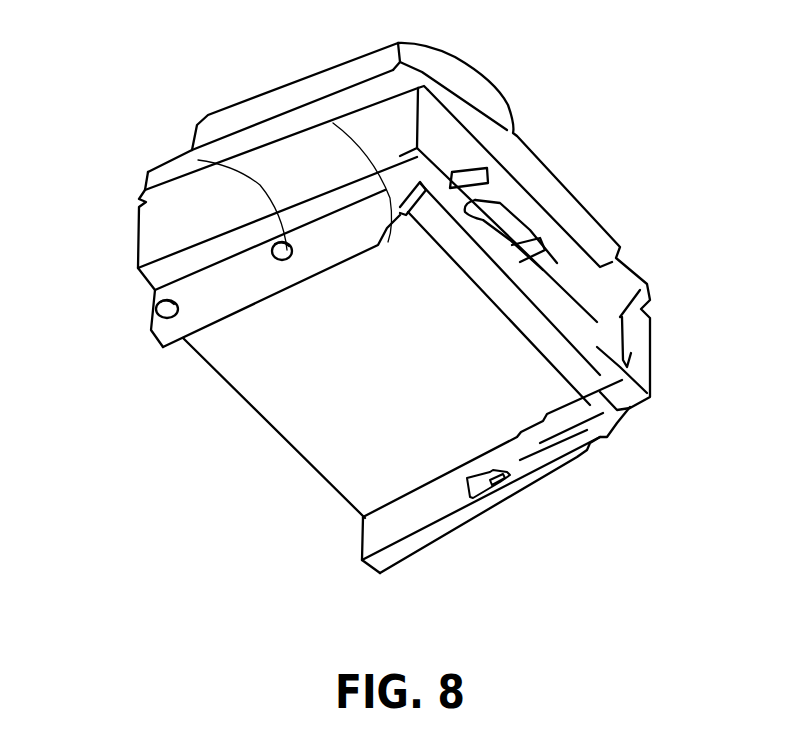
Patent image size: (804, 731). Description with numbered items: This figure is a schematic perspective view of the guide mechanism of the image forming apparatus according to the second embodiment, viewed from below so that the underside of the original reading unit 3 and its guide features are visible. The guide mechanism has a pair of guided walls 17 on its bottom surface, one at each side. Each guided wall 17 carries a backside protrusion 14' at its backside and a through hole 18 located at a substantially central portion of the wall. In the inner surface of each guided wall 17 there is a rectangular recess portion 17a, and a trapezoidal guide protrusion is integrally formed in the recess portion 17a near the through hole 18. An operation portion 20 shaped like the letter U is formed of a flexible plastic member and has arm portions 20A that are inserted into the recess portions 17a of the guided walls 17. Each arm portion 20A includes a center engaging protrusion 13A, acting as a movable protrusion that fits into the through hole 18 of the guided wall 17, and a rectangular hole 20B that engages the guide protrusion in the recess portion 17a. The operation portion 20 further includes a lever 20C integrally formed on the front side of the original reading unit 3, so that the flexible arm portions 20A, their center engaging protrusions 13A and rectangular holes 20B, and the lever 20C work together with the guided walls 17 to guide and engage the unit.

The original reading unit 3 is at (140, 243).
The center engaging protrusion 13A is at (190, 152).
The backside protrusion 14' is at (118, 287).
The guided wall 17 is at (208, 313).
The recess portion 17a is at (583, 446).
The through hole 18 is at (287, 252).
The operation portion 20 is at (627, 380).
The arm portion 20A is at (305, 125).
The rectangular hole 20B is at (497, 476).
The lever 20C is at (593, 268).